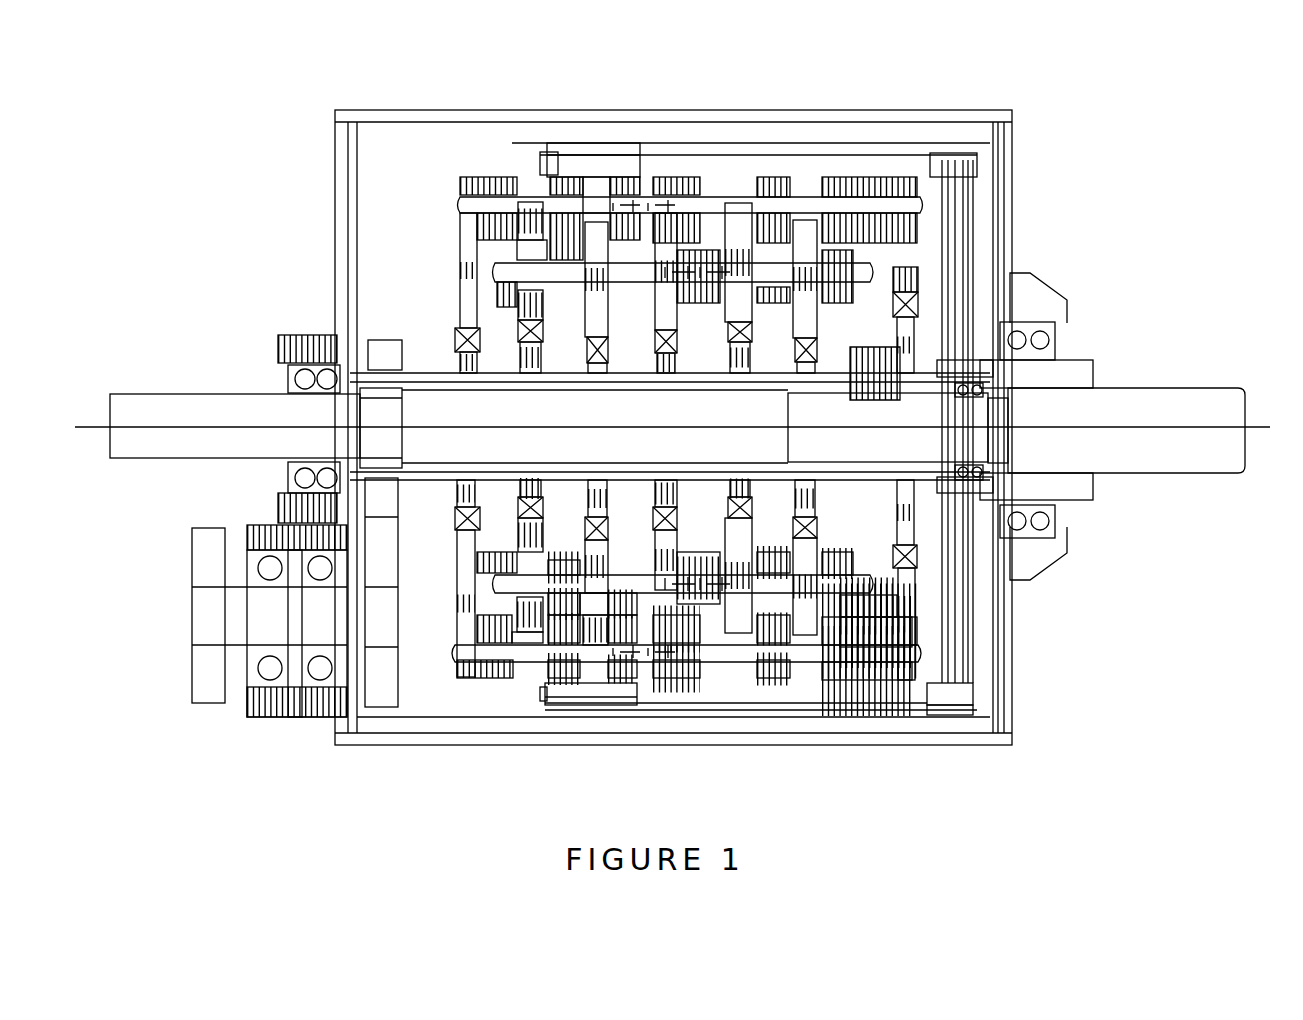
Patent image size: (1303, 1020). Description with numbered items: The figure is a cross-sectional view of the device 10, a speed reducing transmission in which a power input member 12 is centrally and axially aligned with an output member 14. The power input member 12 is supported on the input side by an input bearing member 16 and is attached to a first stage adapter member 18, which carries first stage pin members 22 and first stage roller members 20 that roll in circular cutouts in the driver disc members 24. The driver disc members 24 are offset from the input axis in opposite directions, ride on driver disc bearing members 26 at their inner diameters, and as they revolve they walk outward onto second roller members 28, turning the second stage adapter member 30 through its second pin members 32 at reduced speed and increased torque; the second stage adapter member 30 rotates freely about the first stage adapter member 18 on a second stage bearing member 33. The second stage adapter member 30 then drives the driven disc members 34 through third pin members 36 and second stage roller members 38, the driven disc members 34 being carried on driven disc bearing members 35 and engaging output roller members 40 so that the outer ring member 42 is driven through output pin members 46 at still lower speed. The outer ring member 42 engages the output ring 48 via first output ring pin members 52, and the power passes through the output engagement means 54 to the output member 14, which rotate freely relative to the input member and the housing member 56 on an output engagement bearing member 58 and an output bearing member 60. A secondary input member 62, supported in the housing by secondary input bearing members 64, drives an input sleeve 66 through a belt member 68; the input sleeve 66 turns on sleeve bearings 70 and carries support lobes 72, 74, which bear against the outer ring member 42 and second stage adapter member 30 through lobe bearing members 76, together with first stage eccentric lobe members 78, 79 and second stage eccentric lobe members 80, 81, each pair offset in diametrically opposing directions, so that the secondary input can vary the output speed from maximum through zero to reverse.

The device 10 is at (272, 83).
The power input member 12 is at (170, 402).
The output member 14 is at (1140, 400).
The input bearing member 16 is at (280, 372).
The first stage adapter member 18 is at (912, 345).
The first stage roller members 20 is at (813, 600).
The first stage pin members 22 is at (873, 270).
The driver disc members 24 is at (745, 225).
The driver disc bearing members 26 is at (752, 506).
The second roller members 28 is at (735, 190).
The second stage adapter member 30 is at (690, 675).
The second pin members 32 is at (975, 150).
The second stage bearing member 33 is at (917, 560).
The driven disc members 34 is at (583, 643).
The driven disc bearing members 35 is at (541, 335).
The third pin members 36 is at (495, 270).
The second stage roller members 38 is at (580, 247).
The output roller members 40 is at (600, 183).
The outer ring member 42 is at (465, 590).
The output pin members 46 is at (460, 205).
The output ring 48 is at (880, 707).
The first output ring pin members 52 is at (565, 703).
The output engagement means 54 is at (968, 662).
The housing member 56 is at (335, 222).
The output engagement bearing member 58 is at (985, 393).
The output bearing member 60 is at (1055, 515).
The secondary input member 62 is at (192, 612).
The secondary input bearing members 64 is at (305, 672).
The input sleeve 66 is at (432, 370).
The belt member 68 is at (400, 520).
The sleeve bearings 70 is at (402, 455).
The support lobe 72 is at (480, 348).
The support lobe 74 is at (677, 517).
The lobe bearing members 76 is at (677, 345).
The first stage eccentric lobe member 78 is at (750, 343).
The first stage eccentric lobe member 79 is at (812, 373).
The second stage eccentric lobe member 80 is at (608, 520).
The second stage eccentric lobe member 81 is at (542, 506).